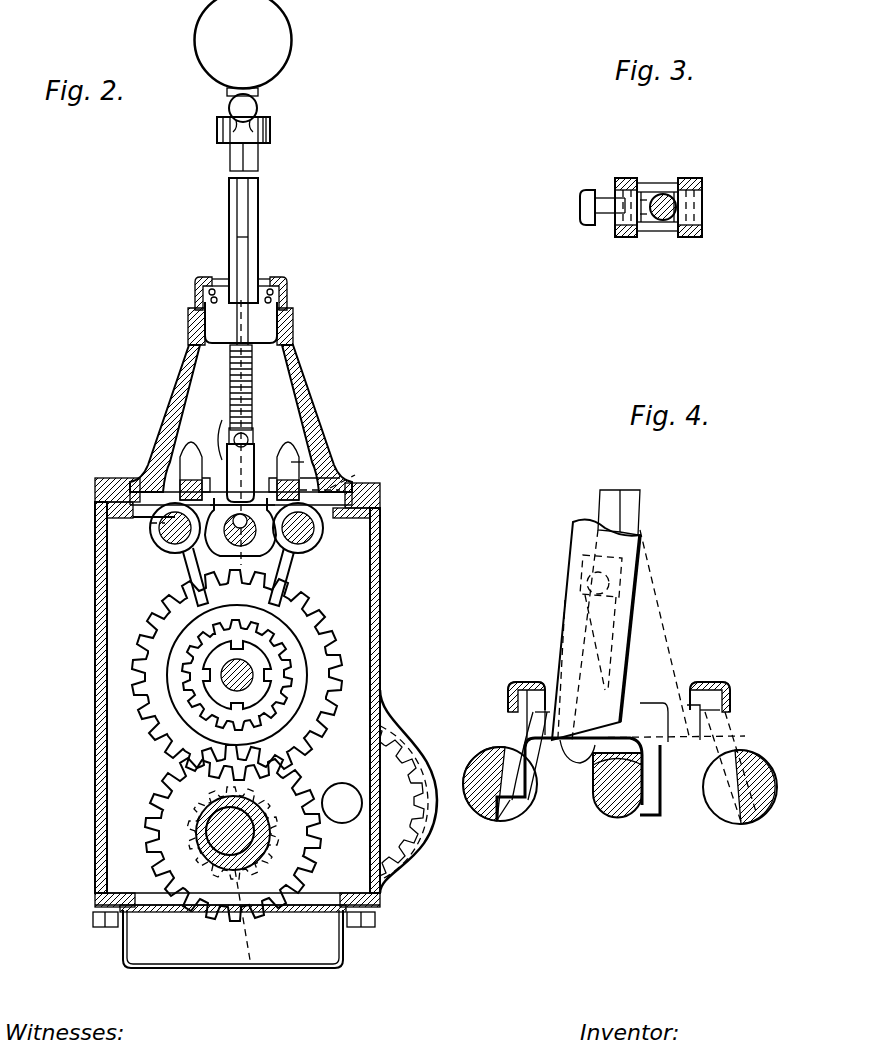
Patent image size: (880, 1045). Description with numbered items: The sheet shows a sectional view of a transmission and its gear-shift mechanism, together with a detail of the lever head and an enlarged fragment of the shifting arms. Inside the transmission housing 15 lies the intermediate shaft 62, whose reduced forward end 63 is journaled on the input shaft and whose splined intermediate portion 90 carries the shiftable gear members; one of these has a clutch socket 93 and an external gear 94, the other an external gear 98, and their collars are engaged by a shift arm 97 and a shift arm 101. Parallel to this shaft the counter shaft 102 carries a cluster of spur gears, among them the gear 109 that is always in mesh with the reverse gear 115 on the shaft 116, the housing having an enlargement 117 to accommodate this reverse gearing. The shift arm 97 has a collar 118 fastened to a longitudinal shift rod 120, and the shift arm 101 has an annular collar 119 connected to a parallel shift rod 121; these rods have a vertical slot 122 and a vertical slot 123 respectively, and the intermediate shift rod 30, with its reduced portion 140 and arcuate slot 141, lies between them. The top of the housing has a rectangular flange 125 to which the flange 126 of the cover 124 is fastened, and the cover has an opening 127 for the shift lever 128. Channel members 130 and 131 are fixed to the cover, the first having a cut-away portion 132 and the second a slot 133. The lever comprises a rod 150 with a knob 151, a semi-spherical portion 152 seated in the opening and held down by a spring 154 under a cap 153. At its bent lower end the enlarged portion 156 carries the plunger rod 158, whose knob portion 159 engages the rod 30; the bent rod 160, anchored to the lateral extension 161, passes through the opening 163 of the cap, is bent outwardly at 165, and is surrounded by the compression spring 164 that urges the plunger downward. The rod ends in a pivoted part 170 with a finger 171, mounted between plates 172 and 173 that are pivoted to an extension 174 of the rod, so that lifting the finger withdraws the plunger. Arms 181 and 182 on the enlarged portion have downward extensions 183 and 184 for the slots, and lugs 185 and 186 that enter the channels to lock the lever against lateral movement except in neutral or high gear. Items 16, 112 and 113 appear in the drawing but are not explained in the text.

In FIG. 2, the transmission housing 15 is at (382, 620).
In FIG. 2, the casing cover 16 is at (360, 610).
In FIG. 2, the shift rod 30 is at (235, 548).
In FIG. 4, the shift rod 30 is at (620, 826).
In FIG. 2, the intermediate shaft 62 is at (222, 716).
In FIG. 2, the reduced forward end 63 is at (227, 682).
In FIG. 2, the splined intermediate portion 90 is at (200, 770).
In FIG. 2, the clutch socket 93 is at (264, 630).
In FIG. 2, the external gear 94 is at (245, 545).
In FIG. 2, the shift arm 97 is at (285, 578).
In FIG. 2, the external gear 98 is at (340, 650).
In FIG. 2, the shift arm 101 is at (230, 560).
In FIG. 2, the counter shaft 102 is at (250, 880).
In FIG. 2, the gear 109 is at (250, 960).
In FIG. 2, the pan 112 is at (330, 968).
In FIG. 2, the foot 113 is at (362, 930).
In FIG. 2, the reverse gear 115 is at (345, 728).
In FIG. 2, the shaft 116 is at (360, 790).
In FIG. 2, the enlargement 117 is at (415, 825).
In FIG. 2, the collar 118 is at (330, 540).
In FIG. 2, the annular collar 119 is at (165, 540).
In FIG. 2, the shift rod 120 is at (370, 492).
In FIG. 4, the shift rod 120 is at (480, 760).
In FIG. 2, the shift rod 121 is at (160, 532).
In FIG. 4, the shift rod 121 is at (740, 760).
In FIG. 2, the vertical slot 122 is at (350, 470).
In FIG. 4, the vertical slot 122 is at (515, 805).
In FIG. 2, the vertical slot 123 is at (150, 490).
In FIG. 4, the vertical slot 123 is at (735, 822).
In FIG. 2, the cover 124 is at (300, 395).
In FIG. 2, the rectangular flange 125 is at (372, 512).
In FIG. 2, the flange 126 is at (352, 485).
In FIG. 2, the opening 127 is at (293, 328).
In FIG. 2, the shift lever 128 is at (262, 255).
In FIG. 3, the shift lever 128 is at (672, 178).
In FIG. 2, the channel member 130 is at (288, 425).
In FIG. 4, the channel member 130 is at (528, 680).
In FIG. 2, the channel member 131 is at (190, 425).
In FIG. 4, the channel member 131 is at (705, 690).
In FIG. 4, the cut away portion 132 is at (540, 685).
In FIG. 4, the slot 133 is at (680, 690).
In FIG. 2, the reduced intermediate portion 140 is at (228, 540).
In FIG. 4, the reduced intermediate portion 140 is at (650, 815).
In FIG. 4, the arcuate slot 141 is at (645, 768).
In FIG. 2, the rod 150 is at (258, 190).
In FIG. 3, the rod 150 is at (660, 220).
In FIG. 2, the knob 151 is at (291, 44).
In FIG. 2, the semi-spherical portion 152 is at (285, 296).
In FIG. 2, the cap 153 is at (196, 296).
In FIG. 2, the spring 154 is at (274, 278).
In FIG. 2, the enlarged portion 156 is at (225, 428).
In FIG. 4, the enlarged portion 156 is at (618, 682).
In FIG. 2, the plunger rod 158 is at (246, 470).
In FIG. 4, the plunger rod 158 is at (632, 620).
In FIG. 2, the knob portion 159 is at (318, 478).
In FIG. 4, the knob portion 159 is at (575, 758).
In FIG. 2, the bent rod 160 is at (237, 202).
In FIG. 3, the bent rod 160 is at (640, 212).
In FIG. 4, the bent rod 160 is at (627, 513).
In FIG. 2, the lateral extension 161 is at (248, 440).
In FIG. 4, the lateral extension 161 is at (620, 570).
In FIG. 2, the opening 163 is at (210, 282).
In FIG. 2, the compression spring 164 is at (232, 370).
In FIG. 2, the outward bend 165 is at (237, 237).
In FIG. 2, the pivotally mounted part 170 is at (236, 143).
In FIG. 3, the pivotally mounted part 170 is at (622, 216).
In FIG. 2, the finger 171 is at (253, 109).
In FIG. 3, the finger 171 is at (583, 210).
In FIG. 2, the plate 172 is at (223, 130).
In FIG. 3, the plate 172 is at (648, 183).
In FIG. 2, the plate 173 is at (270, 132).
In FIG. 3, the plate 173 is at (675, 232).
In FIG. 3, the extension 174 is at (702, 205).
In FIG. 2, the arm 181 is at (300, 462).
In FIG. 4, the arm 181 is at (518, 683).
In FIG. 2, the arm 182 is at (130, 494).
In FIG. 4, the arm 182 is at (640, 700).
In FIG. 2, the downward extension 183 is at (325, 545).
In FIG. 4, the downward extension 183 is at (482, 815).
In FIG. 2, the downward extension 184 is at (218, 548).
In FIG. 4, the downward extension 184 is at (722, 735).
In FIG. 2, the lug 185 is at (274, 485).
In FIG. 4, the lug 185 is at (540, 725).
In FIG. 2, the lug 186 is at (208, 485).
In FIG. 4, the lug 186 is at (710, 710).